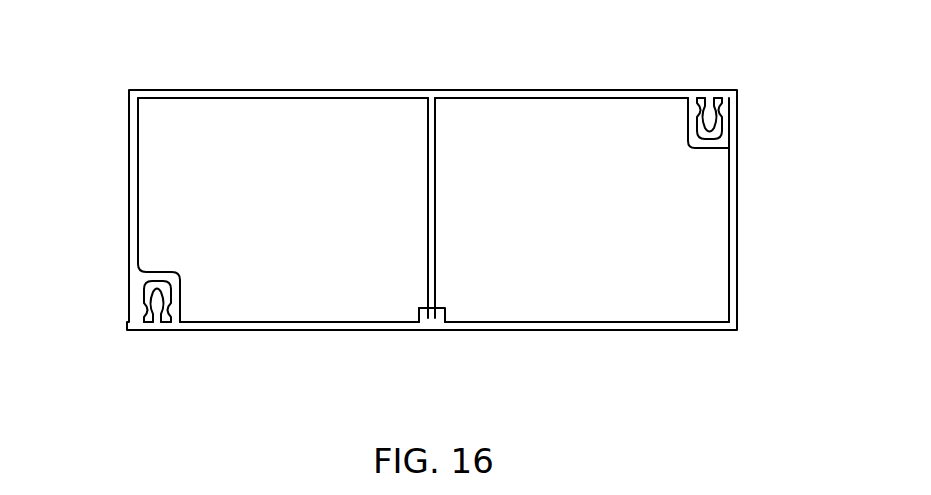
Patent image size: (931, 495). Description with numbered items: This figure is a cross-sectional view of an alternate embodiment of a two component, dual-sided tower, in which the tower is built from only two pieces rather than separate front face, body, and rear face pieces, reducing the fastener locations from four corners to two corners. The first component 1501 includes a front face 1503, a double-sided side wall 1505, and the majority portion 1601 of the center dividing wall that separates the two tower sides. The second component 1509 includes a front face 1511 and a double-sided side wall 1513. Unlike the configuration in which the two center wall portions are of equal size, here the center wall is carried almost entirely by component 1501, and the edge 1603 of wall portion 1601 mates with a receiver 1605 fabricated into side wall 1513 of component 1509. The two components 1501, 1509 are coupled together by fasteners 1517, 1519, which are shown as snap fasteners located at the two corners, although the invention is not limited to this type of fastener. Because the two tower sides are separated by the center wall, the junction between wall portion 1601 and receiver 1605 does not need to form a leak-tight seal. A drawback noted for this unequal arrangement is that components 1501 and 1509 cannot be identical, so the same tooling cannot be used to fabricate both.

The component 1501 is at (350, 68).
The front face 1503 is at (136, 196).
The double-sided side wall 1505 is at (538, 94).
The component 1509 is at (488, 352).
The front face 1511 is at (731, 247).
The double-sided side wall 1513 is at (351, 328).
The fastener 1517 is at (114, 305).
The fastener 1519 is at (756, 118).
The majority portion of the center dividing wall 1601 is at (431, 173).
The edge 1603 is at (434, 311).
The receiver 1605 is at (420, 313).